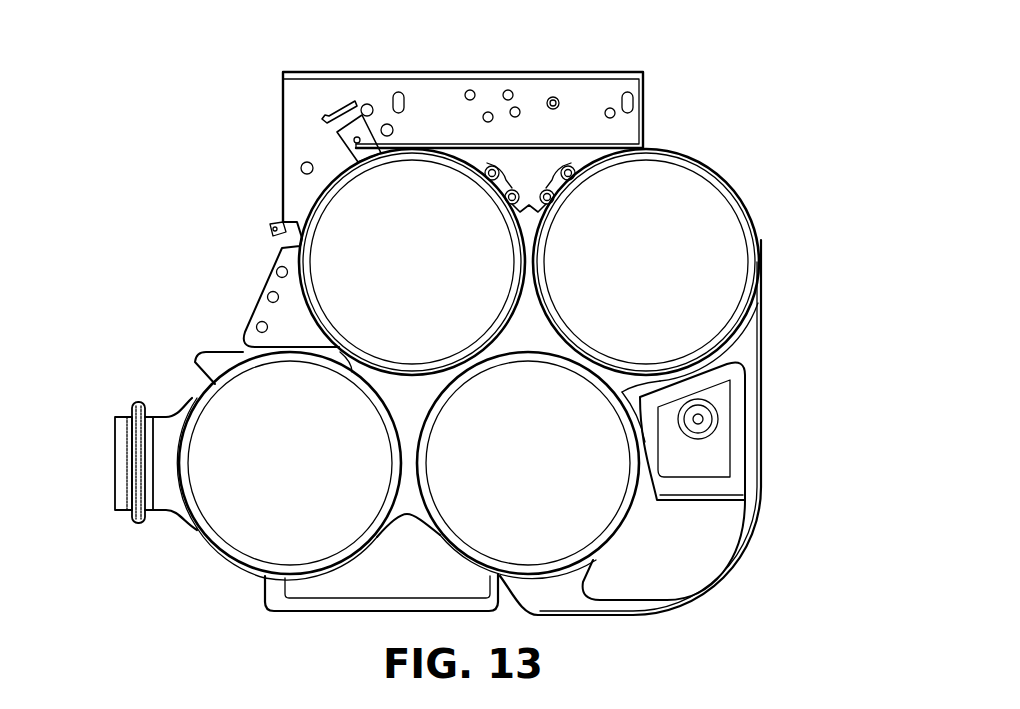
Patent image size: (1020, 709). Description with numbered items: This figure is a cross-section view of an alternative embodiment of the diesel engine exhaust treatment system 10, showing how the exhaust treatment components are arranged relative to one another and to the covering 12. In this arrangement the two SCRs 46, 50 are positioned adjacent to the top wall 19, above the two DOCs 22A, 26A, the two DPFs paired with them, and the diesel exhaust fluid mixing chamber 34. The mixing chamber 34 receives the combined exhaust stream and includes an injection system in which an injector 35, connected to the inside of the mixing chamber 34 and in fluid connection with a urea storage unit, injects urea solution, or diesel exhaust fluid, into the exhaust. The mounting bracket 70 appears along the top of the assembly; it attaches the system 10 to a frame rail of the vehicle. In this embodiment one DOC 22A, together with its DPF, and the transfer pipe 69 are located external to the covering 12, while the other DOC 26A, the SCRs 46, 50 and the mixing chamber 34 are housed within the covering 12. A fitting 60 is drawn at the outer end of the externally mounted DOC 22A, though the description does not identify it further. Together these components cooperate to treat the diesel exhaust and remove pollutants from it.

The diesel engine exhaust treatment system 10 is at (748, 112).
The covering 12 is at (762, 345).
The top wall 19 is at (587, 148).
The DOC 22A is at (250, 512).
The DOC 26A is at (545, 487).
The diesel exhaust fluid mixing chamber 34 is at (718, 443).
The injector 35 is at (700, 419).
The SCR 46 is at (697, 222).
The SCR 50 is at (384, 228).
The connector 60 is at (115, 468).
The transfer pipe 69 is at (353, 577).
The mounting bracket 70 is at (627, 102).